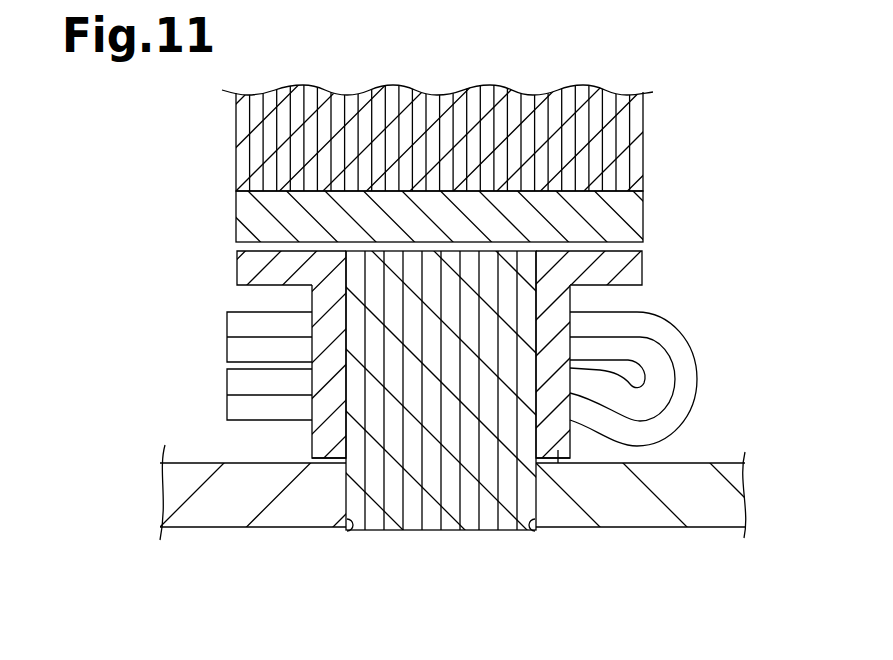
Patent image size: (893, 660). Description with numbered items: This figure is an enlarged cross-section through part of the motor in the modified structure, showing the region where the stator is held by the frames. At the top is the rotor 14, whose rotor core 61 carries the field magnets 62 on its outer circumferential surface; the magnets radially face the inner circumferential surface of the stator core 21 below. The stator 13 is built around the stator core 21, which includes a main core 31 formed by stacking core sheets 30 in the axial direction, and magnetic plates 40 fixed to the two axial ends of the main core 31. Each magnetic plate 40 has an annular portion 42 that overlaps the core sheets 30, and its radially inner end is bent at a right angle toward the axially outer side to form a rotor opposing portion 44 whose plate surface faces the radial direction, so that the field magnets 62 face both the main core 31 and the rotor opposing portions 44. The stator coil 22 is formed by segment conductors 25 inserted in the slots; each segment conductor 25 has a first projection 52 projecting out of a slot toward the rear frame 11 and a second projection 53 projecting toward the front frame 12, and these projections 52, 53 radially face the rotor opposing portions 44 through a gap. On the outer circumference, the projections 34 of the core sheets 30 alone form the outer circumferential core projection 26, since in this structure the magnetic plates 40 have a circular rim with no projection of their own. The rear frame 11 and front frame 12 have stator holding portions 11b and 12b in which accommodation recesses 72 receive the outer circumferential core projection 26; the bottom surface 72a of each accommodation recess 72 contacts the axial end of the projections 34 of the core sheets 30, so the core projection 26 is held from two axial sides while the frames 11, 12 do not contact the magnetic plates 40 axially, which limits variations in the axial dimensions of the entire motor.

The rotor 14 is at (446, 157).
The rotor core 61 is at (636, 157).
The field magnet 62 is at (638, 218).
The connector 13 is at (405, 432).
The rotor opposing portion 44 is at (245, 259).
The magnetic plate 40 is at (312, 446).
The annular portion 42 is at (318, 461).
The second projection 53 is at (225, 323).
The first projection 52 is at (673, 328).
The terminal 22 is at (664, 377).
The segment conductor 25 is at (683, 397).
The projection 34 is at (389, 431).
The core sheet 30 is at (372, 531).
The main core 31 is at (425, 531).
The stator core 21 is at (463, 543).
The outer circumferential core projection 26 is at (498, 531).
The bottom surface 72a is at (442, 571).
The accommodation recess 72 is at (352, 532).
The stator holding portion 12b is at (278, 511).
The front frame 12 is at (205, 527).
The stator holding portion 11b is at (655, 514).
The rear frame 11 is at (698, 528).